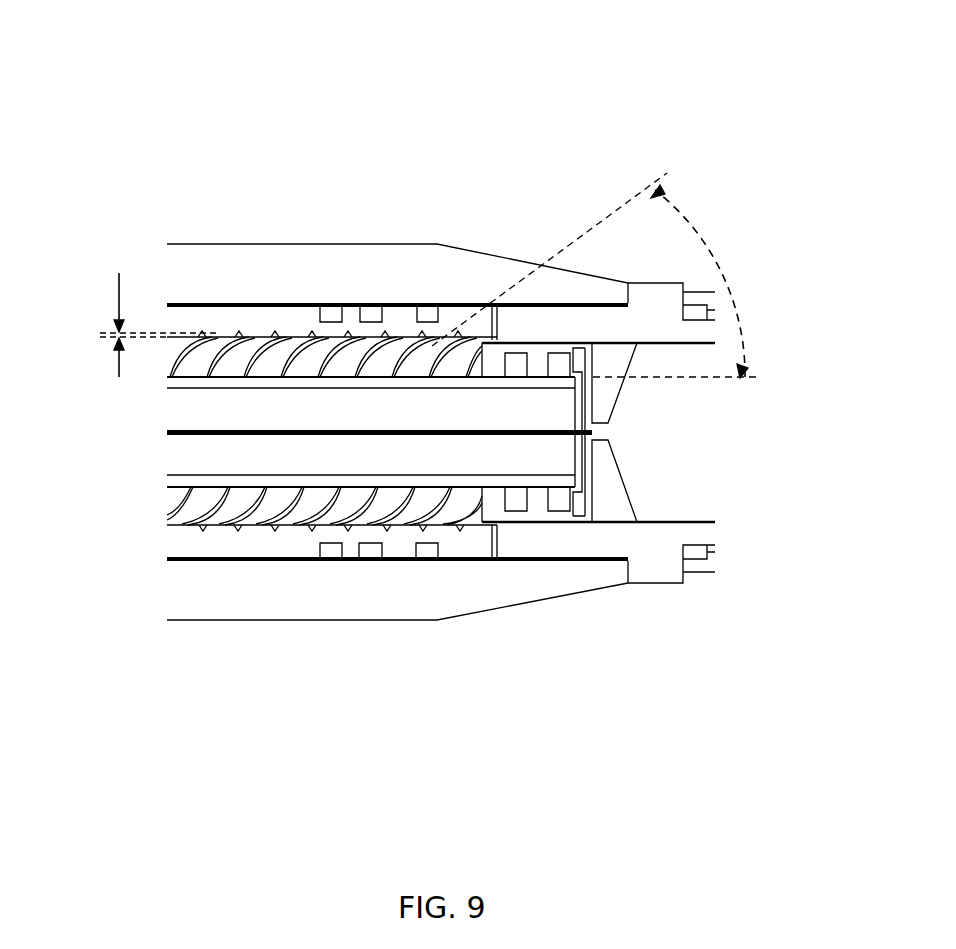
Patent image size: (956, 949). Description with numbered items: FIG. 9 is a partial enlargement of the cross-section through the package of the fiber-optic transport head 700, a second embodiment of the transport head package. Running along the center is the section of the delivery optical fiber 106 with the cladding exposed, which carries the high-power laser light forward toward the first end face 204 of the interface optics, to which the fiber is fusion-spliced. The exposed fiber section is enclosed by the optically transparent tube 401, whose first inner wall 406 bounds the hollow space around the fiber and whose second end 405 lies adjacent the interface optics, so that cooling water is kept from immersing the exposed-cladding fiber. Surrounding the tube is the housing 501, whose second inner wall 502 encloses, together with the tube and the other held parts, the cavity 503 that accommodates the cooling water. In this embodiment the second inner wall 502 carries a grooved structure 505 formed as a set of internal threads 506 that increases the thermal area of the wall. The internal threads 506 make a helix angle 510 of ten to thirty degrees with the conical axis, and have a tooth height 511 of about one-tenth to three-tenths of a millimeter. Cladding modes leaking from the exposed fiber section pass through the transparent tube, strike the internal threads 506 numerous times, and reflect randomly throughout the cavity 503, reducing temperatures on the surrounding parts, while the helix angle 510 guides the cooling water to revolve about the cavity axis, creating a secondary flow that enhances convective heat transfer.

The package of the fiber-optic transport head 700 is at (356, 218).
The housing 501 is at (234, 232).
The second inner wall 502 is at (288, 337).
The cavity 503 is at (443, 505).
The grooved structure 505 is at (393, 513).
The set of internal threads 506 is at (415, 337).
The optically transparent tube 401 is at (361, 386).
The first inner wall 406 is at (298, 477).
The section of the delivery optical fiber with the cladding exposed 106 is at (232, 438).
The second end 405 is at (577, 440).
The first end face 204 is at (593, 440).
The helix angle 510 is at (708, 255).
The tooth height 511 is at (157, 314).